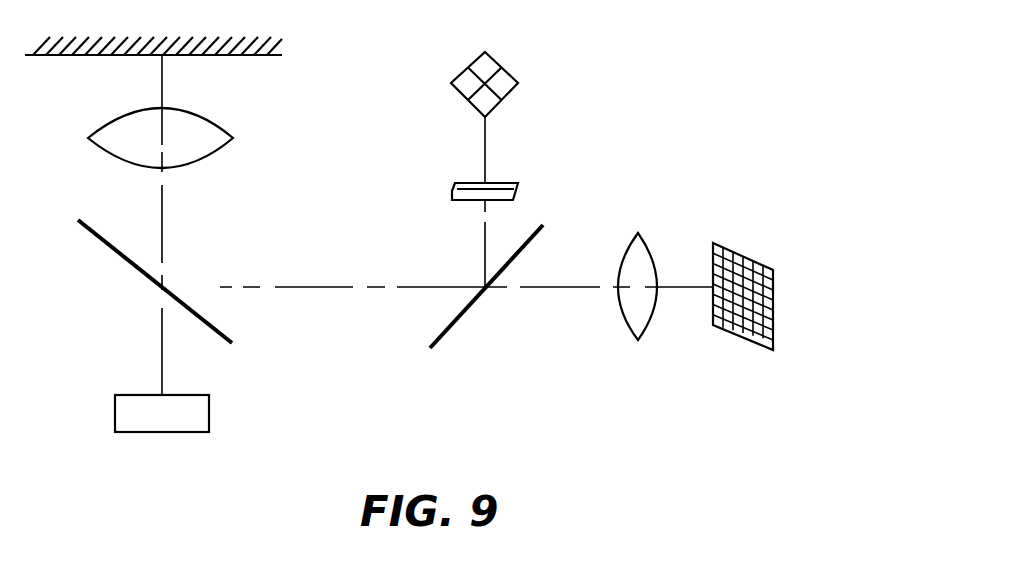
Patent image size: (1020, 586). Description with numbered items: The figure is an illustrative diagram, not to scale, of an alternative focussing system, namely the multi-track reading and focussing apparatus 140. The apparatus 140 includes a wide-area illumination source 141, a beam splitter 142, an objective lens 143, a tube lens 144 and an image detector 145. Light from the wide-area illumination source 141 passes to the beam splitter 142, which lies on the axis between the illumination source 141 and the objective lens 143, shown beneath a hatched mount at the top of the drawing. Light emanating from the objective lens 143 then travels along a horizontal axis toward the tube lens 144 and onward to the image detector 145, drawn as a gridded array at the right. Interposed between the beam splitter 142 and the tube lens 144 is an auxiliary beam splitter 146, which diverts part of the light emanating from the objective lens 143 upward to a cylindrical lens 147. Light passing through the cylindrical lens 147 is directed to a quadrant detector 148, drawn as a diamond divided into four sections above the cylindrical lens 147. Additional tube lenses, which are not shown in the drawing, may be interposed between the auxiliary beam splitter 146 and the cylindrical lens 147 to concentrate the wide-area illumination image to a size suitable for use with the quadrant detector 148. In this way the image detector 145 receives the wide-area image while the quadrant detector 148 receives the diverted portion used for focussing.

The multi-track reading and focussing system 140 is at (700, 119).
The wide-area illumination source 141 is at (209, 402).
The beam splitter 142 is at (130, 268).
The objective lens 143 is at (233, 140).
The tube lens 144 is at (648, 322).
The image detector 145 is at (735, 253).
The auxiliary beam splitter 146 is at (462, 316).
The cylindrical lens 147 is at (518, 190).
The quadrant detector 148 is at (496, 59).